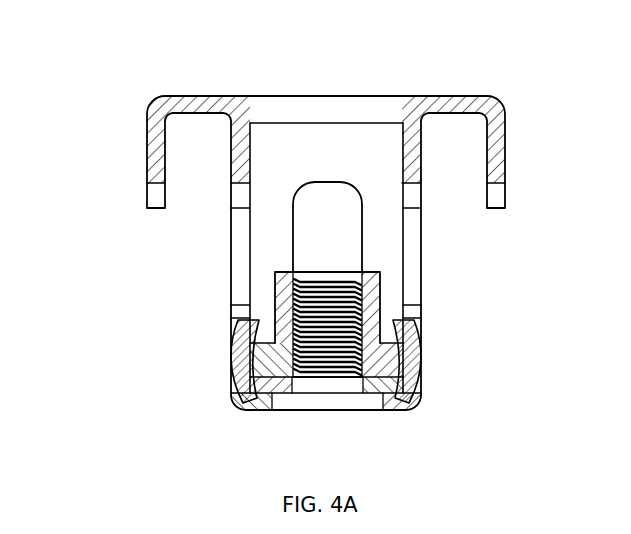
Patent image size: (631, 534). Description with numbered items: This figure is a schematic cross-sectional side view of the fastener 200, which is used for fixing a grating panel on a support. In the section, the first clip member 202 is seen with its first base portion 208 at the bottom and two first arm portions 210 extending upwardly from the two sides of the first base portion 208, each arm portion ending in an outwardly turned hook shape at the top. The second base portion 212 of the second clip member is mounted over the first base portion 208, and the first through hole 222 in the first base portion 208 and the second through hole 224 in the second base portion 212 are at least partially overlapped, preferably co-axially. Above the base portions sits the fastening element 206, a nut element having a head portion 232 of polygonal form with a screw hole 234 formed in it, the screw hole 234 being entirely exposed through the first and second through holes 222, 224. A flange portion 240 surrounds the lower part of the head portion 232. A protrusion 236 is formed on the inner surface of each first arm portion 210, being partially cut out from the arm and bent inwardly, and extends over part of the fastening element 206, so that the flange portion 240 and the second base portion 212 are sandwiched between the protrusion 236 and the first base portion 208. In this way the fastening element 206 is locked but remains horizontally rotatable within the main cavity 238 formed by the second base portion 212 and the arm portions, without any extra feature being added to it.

The fastener 200 is at (59, 48).
The first clip member 202 is at (512, 161).
The fastening element 206 is at (363, 268).
The first base portion 208 is at (255, 412).
The first arm portions 210 is at (231, 240).
The second base portion 212 is at (240, 391).
The first through hole 222 is at (395, 403).
The second through hole 224 is at (395, 372).
The head portion 232 is at (380, 300).
The screw hole 234 is at (360, 330).
The protrusion 236 is at (236, 330).
The main cavity 238 is at (260, 300).
The flange portion 240 is at (240, 366).